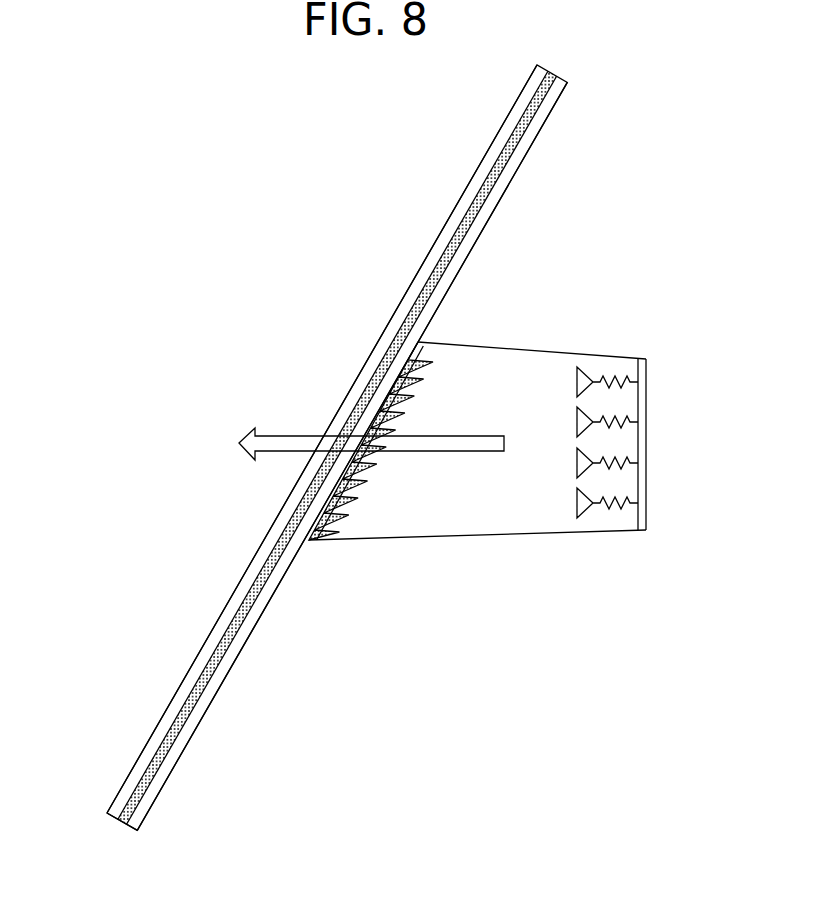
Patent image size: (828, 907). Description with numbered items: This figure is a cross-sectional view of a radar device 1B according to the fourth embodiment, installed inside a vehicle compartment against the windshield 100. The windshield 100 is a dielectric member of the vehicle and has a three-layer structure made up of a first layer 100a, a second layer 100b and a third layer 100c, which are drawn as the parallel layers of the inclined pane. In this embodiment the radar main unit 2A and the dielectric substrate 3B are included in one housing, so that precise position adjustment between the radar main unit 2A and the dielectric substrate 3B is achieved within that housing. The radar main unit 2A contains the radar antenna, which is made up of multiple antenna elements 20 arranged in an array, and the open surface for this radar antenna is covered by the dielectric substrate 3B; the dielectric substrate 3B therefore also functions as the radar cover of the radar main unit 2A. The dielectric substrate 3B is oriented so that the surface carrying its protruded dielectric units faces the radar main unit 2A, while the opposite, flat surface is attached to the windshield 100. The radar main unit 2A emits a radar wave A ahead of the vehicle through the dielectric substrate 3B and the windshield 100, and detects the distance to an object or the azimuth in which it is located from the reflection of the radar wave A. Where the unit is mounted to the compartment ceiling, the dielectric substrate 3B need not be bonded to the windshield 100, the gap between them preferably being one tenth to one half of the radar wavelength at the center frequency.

The windshield 100 is at (500, 119).
The first layer 100a is at (170, 775).
The second layer 100b is at (120, 822).
The third layer 100c is at (140, 753).
The radar device 1B is at (503, 399).
The radar main unit 2A is at (520, 349).
The dielectric substrate 3B is at (373, 487).
The antenna elements 20 is at (611, 510).
The radar wave A is at (288, 428).